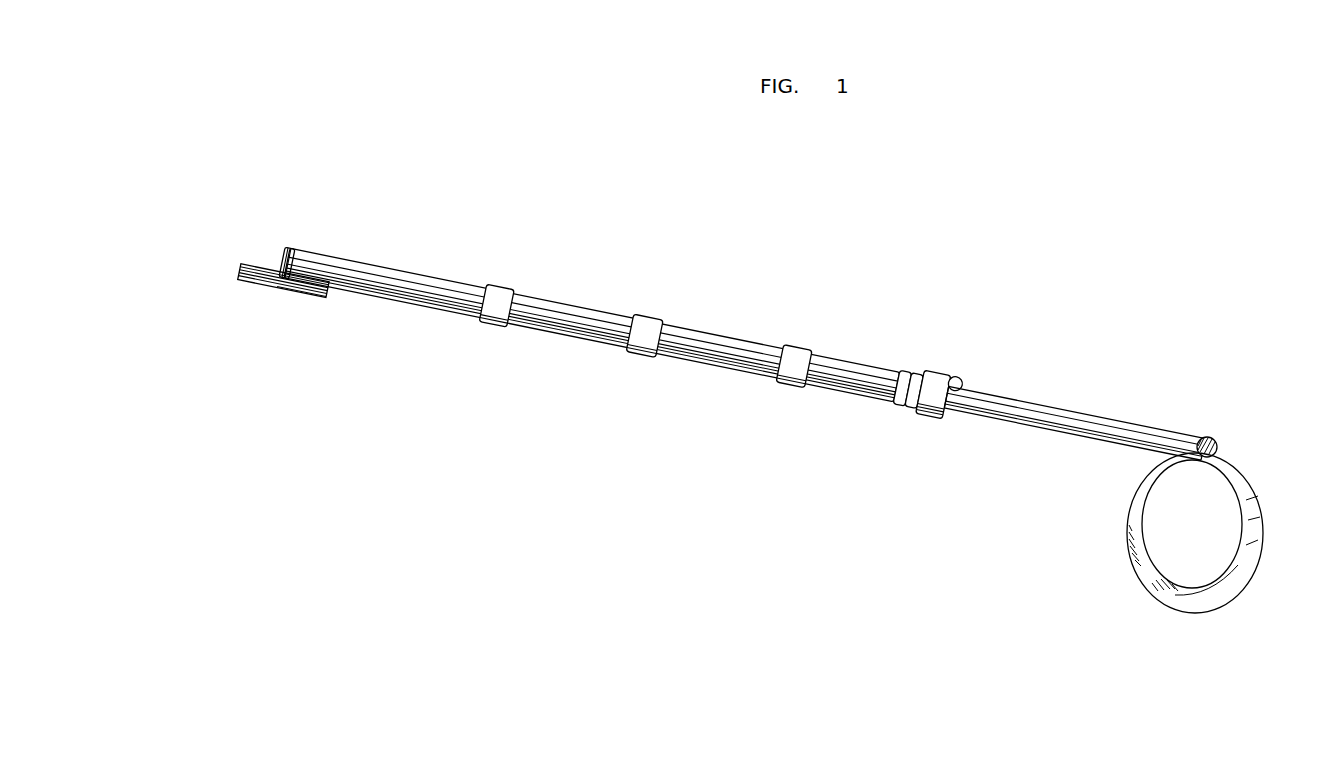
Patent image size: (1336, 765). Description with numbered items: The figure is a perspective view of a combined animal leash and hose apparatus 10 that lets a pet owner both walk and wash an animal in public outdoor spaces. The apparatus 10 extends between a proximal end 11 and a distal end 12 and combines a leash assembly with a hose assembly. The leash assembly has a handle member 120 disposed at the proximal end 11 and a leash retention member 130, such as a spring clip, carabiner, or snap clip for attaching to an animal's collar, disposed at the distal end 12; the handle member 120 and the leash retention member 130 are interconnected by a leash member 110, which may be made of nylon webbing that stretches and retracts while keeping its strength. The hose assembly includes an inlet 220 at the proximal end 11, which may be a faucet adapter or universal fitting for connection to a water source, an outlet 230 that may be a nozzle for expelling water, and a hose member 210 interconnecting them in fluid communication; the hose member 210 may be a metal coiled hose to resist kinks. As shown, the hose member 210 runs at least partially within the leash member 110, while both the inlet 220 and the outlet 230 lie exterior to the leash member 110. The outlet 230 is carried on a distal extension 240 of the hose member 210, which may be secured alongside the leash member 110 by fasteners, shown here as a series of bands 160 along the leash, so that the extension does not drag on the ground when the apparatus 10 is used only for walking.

The apparatus 10 is at (428, 596).
The proximal end 11 is at (1168, 332).
The distal end 12 is at (278, 383).
The leash member 110 is at (973, 418).
The handle member 120 is at (1128, 570).
The leash retention member 130 is at (247, 278).
The collars 160 is at (509, 281).
The hose member 210 is at (286, 250).
The inlet 220 is at (1219, 433).
The outlet 230 is at (958, 371).
The distal extension 240 is at (428, 262).